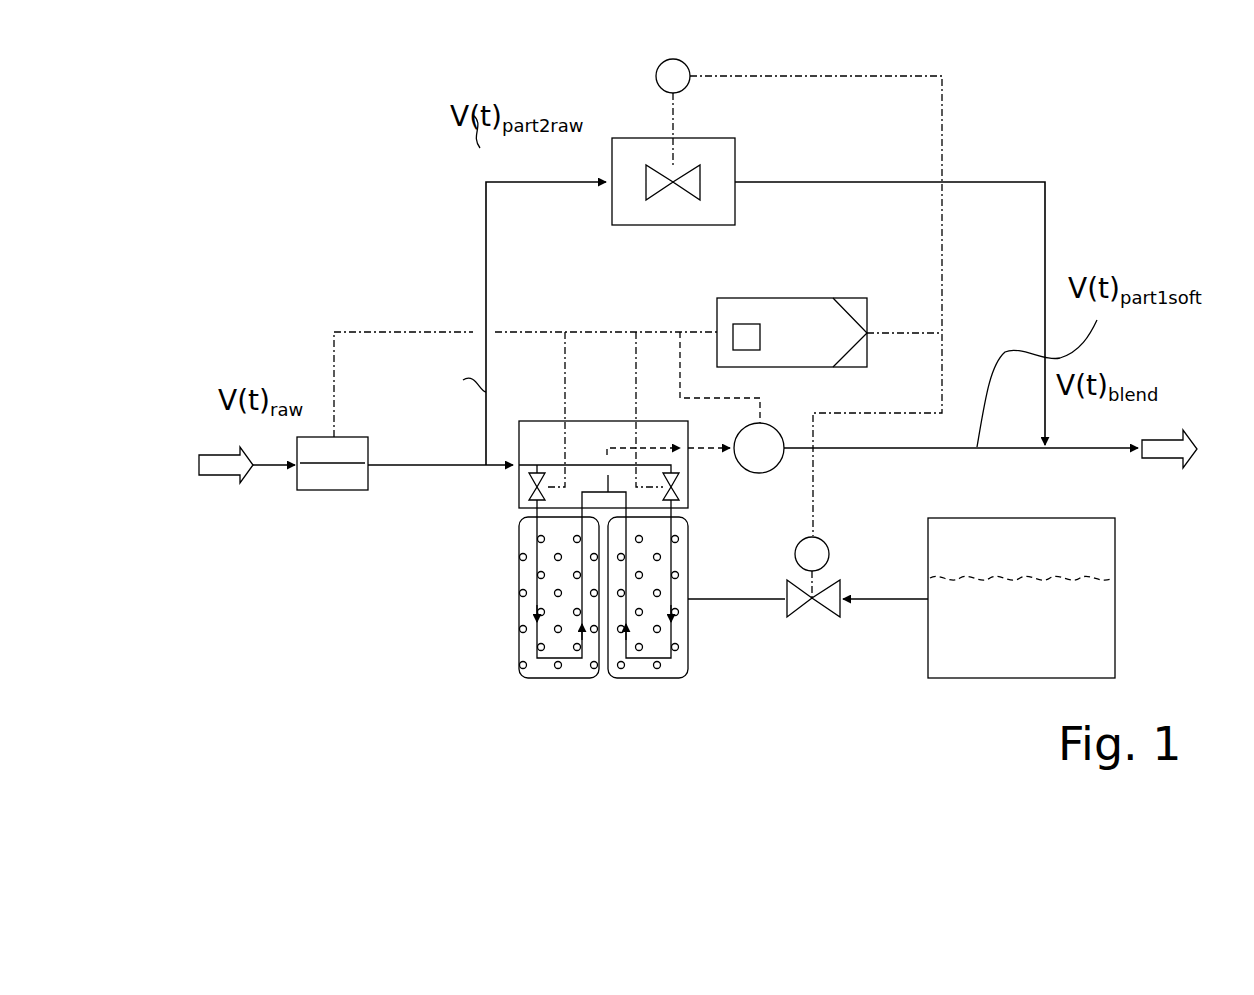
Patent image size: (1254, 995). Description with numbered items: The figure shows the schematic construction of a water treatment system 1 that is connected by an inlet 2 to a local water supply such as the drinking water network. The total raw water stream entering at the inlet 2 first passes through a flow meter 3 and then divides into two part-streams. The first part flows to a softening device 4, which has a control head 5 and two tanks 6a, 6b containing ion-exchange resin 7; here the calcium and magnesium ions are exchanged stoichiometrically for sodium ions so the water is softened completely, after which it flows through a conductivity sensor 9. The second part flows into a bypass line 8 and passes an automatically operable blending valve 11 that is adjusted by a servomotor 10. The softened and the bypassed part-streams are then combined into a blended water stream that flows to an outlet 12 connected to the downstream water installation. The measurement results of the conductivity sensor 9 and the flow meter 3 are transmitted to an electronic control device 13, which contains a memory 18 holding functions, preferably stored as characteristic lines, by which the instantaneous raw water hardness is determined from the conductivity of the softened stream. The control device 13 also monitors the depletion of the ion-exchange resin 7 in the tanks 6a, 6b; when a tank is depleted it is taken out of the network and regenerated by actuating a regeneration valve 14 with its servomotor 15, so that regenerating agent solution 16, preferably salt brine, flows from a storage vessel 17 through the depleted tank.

The water treatment system 1 is at (426, 672).
The inlet 2 is at (271, 427).
The flow meter 3 is at (341, 494).
The softening device 4 is at (604, 581).
The control head 5 is at (519, 500).
The tank 6a is at (519, 667).
The tank 6b is at (688, 648).
The ion-exchange resin 7 is at (682, 564).
The bypass line 8 is at (484, 393).
The conductivity sensor 9 is at (759, 474).
The servomotor 10 is at (690, 62).
The blending valve 11 is at (700, 192).
The outlet 12 is at (1082, 412).
The electronic control device 13 is at (868, 300).
The regeneration valve 14 is at (820, 612).
The servomotor 15 is at (830, 552).
The regenerating agent solution 16 is at (1056, 599).
The storage vessel 17 is at (1115, 656).
The memory 18 is at (742, 324).